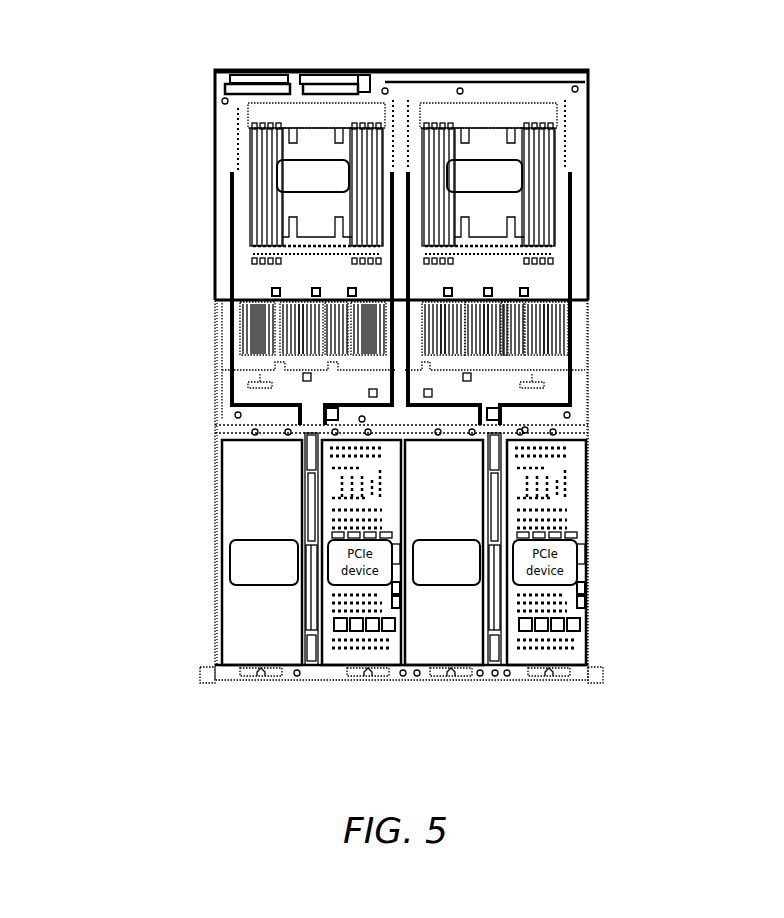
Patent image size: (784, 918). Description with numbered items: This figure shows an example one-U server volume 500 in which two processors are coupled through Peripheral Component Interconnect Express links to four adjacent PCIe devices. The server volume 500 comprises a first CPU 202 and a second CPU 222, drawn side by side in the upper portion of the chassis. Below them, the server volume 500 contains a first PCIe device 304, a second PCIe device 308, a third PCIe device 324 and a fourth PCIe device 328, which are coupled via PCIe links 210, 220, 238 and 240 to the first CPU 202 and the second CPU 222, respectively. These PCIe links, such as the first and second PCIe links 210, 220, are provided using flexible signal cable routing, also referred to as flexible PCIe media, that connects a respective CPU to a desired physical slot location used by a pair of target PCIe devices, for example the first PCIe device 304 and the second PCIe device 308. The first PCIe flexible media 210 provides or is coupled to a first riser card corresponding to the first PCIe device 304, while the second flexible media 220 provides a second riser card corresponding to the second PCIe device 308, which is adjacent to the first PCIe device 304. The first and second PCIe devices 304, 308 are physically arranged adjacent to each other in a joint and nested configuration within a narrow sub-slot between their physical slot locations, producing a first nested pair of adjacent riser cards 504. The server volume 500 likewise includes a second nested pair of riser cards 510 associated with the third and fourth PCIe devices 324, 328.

The server volume 500 is at (128, 60).
The first CPU 202 is at (270, 181).
The second CPU 222 is at (522, 184).
The first PCIe link 210 is at (286, 415).
The second PCIe link 220 is at (316, 420).
The PCIe link 238 is at (492, 429).
The PCIe link 240 is at (513, 415).
The first PCIe device 304 is at (262, 552).
The second PCIe device 308 is at (367, 594).
The third PCIe device 324 is at (444, 552).
The fourth PCIe device 328 is at (597, 547).
The first nested pair of riser cards 504 is at (294, 585).
The second nested pair of riser cards 510 is at (515, 584).